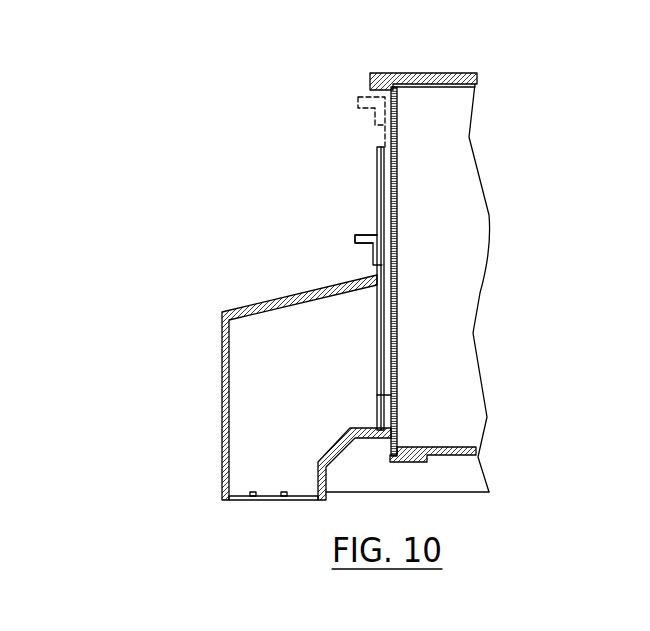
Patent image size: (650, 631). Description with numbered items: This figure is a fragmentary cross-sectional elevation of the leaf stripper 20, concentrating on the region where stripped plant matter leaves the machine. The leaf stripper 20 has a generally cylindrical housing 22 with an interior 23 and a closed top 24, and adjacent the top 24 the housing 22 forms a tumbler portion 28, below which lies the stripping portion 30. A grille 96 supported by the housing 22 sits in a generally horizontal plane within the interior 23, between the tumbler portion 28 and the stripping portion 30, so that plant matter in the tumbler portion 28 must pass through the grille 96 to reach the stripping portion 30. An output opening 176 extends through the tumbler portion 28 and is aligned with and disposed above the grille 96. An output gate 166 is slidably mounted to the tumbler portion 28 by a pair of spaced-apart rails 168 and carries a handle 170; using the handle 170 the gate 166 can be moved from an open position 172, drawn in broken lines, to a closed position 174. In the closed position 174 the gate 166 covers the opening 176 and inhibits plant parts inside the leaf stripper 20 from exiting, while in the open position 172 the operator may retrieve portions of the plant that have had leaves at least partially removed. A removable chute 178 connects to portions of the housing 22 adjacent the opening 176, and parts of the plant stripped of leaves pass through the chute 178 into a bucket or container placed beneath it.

The leaf stripper 20 is at (101, 171).
The housing 22 is at (330, 79).
The interior 23 is at (464, 170).
The top 24 is at (445, 72).
The tumbler portion 28 is at (455, 303).
The stripping portion 30 is at (383, 485).
The grille 96 is at (438, 447).
The output gate 166 is at (387, 257).
The rails 168 is at (375, 167).
The handle 170 is at (355, 237).
The open position 172 is at (377, 123).
The closed position 174 is at (346, 250).
The output opening 176 is at (397, 340).
The chute 178 is at (237, 316).